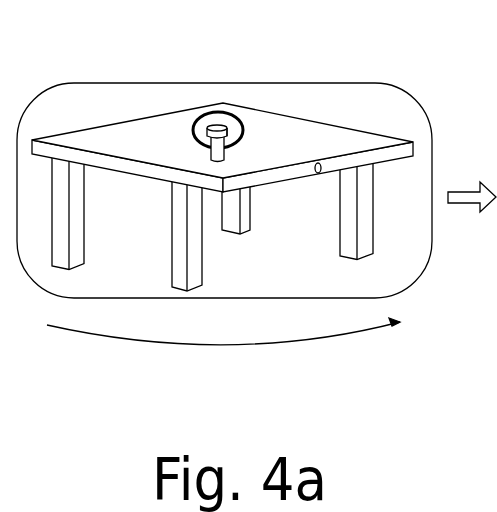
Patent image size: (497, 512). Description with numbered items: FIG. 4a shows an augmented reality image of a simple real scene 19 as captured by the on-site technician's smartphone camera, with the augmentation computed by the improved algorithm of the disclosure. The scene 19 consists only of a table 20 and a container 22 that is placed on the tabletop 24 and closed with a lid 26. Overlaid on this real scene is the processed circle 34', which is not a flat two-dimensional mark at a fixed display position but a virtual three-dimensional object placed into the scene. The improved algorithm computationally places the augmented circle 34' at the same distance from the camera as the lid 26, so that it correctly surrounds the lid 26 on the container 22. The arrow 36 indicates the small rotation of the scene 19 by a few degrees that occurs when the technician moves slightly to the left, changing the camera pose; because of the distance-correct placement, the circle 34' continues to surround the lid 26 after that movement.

The scene 19 is at (282, 269).
The table 20 is at (367, 223).
The container 22 is at (203, 140).
The tabletop 24 is at (282, 135).
The lid 26 is at (220, 122).
The processed circle 34' is at (264, 85).
The arrow 36 is at (93, 336).